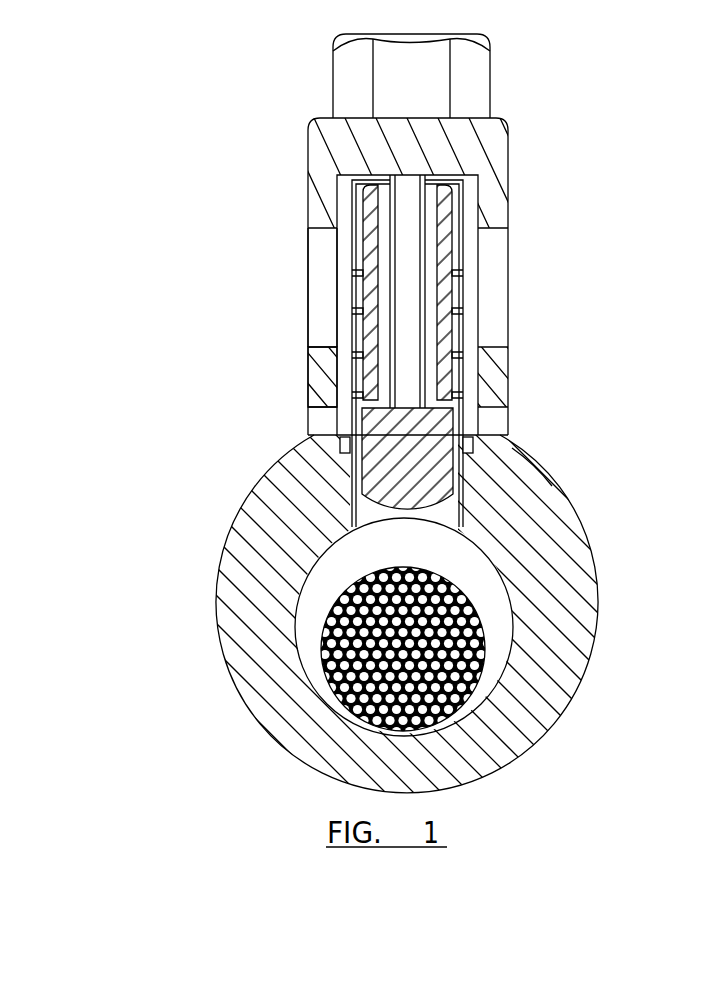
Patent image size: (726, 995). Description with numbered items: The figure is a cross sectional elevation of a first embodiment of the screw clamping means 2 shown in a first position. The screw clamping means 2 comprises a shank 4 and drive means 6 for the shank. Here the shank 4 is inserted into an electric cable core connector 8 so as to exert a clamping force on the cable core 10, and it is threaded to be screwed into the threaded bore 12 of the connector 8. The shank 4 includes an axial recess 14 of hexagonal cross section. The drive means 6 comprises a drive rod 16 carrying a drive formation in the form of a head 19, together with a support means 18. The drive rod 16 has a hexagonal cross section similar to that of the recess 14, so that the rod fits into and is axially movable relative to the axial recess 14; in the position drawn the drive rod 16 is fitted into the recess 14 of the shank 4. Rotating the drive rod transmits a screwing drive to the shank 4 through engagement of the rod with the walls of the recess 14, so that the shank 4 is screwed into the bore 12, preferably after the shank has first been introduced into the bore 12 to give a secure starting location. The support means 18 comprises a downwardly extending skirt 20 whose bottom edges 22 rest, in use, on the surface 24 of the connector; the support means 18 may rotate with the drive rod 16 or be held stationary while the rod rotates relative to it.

The screw clamping means 2 is at (500, 368).
The shank 4 is at (450, 297).
The drive means 6 is at (481, 153).
The electric cable core connector 8 is at (535, 602).
The cable core 10 is at (470, 657).
The threaded bore 12 is at (305, 574).
The axial recess 14 is at (313, 372).
The drive rod 16 is at (385, 303).
The support means 18 is at (483, 210).
The head 19 is at (465, 82).
The skirt 20 is at (330, 262).
The bottom edges 22 is at (495, 413).
The surface 24 is at (555, 476).